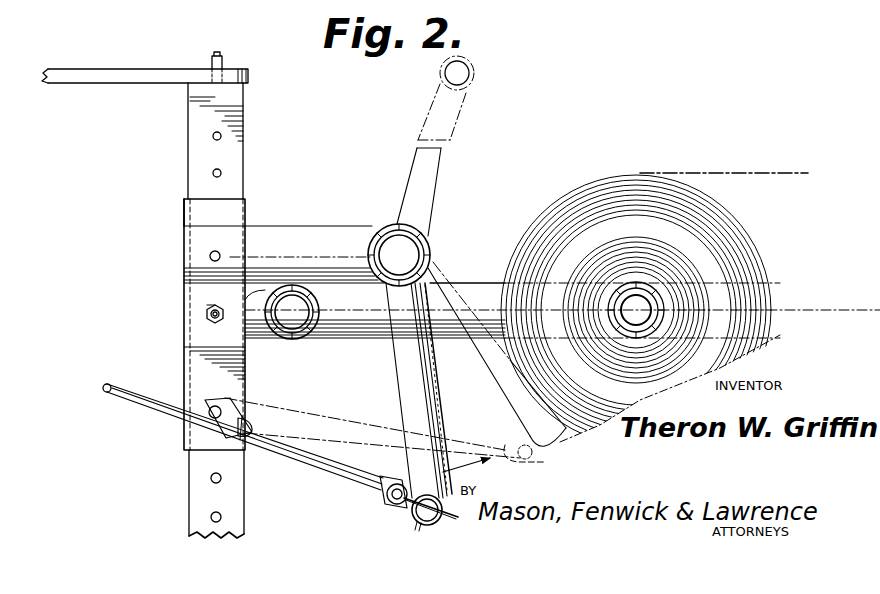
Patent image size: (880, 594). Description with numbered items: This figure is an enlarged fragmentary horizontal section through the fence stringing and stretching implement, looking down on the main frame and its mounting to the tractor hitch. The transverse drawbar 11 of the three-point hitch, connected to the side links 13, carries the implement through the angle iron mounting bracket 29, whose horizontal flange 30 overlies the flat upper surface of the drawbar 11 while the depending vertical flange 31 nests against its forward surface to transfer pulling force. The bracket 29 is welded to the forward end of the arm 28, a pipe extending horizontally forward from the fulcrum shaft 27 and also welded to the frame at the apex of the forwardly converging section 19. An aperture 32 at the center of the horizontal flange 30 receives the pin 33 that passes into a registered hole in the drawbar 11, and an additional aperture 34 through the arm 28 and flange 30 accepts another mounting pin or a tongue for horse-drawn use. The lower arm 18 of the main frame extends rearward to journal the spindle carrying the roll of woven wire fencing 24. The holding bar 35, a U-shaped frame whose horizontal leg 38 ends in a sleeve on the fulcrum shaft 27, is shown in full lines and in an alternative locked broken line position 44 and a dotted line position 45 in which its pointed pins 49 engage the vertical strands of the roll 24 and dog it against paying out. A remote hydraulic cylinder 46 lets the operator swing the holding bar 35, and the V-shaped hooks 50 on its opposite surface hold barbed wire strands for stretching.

The drawbar 11 is at (243, 153).
The side links 13 is at (128, 76).
The lower arm 18 is at (468, 292).
The forwardly converging section 19 is at (257, 314).
The roll of woven wire fencing 24 is at (605, 210).
The fulcrum shaft 27 is at (433, 241).
The arm 28 is at (312, 236).
The angle iron mounting bracket 29 is at (203, 213).
The horizontal flange 30 is at (230, 210).
The depending vertical flange 31 is at (183, 354).
The aperture 32 is at (205, 314).
The pin 33 is at (207, 305).
The additional aperture 34 is at (204, 257).
The holding bar 35 is at (404, 376).
The horizontal leg 38 is at (407, 401).
The broken line position of holding bar 44 is at (401, 192).
The dotted line position of holding bar 45 is at (470, 357).
The remote hydraulic cylinder 46 is at (328, 488).
The pointed pins 49 is at (442, 513).
The V-shaped hooks 50 is at (470, 90).